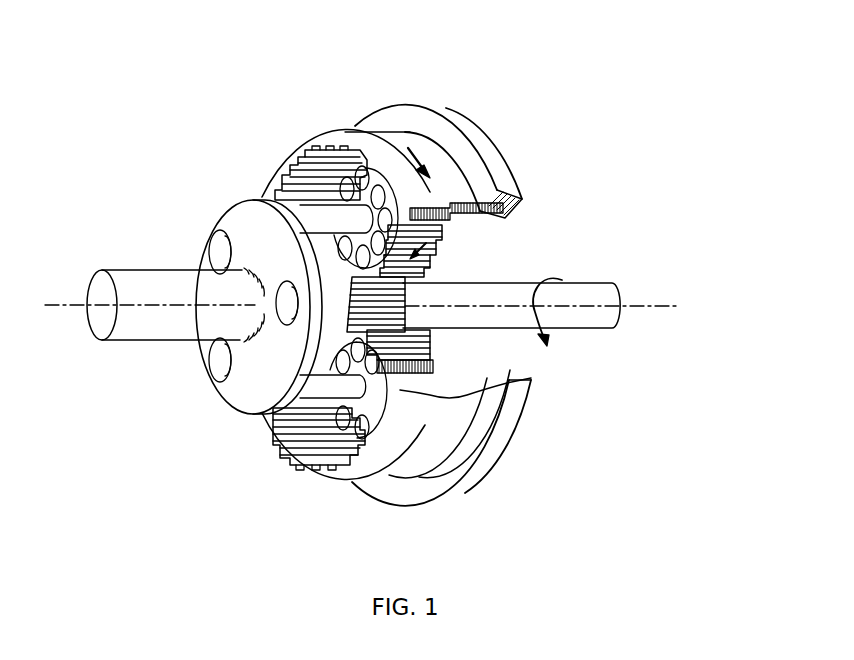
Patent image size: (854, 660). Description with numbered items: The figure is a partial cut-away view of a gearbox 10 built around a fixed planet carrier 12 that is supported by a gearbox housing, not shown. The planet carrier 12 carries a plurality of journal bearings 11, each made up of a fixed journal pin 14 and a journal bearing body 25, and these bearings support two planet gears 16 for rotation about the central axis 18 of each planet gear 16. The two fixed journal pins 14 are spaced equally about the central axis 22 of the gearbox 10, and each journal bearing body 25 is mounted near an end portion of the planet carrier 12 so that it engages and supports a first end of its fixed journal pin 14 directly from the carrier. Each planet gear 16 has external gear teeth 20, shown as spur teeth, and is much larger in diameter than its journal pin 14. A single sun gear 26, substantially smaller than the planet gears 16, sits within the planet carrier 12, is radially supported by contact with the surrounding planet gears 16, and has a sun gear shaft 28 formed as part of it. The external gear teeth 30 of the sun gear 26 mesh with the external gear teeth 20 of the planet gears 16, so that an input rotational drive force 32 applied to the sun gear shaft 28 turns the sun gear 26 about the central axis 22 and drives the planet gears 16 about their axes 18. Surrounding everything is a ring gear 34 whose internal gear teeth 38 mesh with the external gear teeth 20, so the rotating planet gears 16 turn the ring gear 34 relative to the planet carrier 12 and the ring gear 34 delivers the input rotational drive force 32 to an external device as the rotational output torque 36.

The gearbox 10 is at (537, 64).
The journal bearings 11 is at (397, 213).
The planet carrier 12 is at (139, 319).
The fixed journal pin 14 is at (283, 217).
The planet gears 16 is at (360, 150).
The central axis of planet gear 18 is at (430, 392).
The external gear teeth 20 is at (420, 235).
The central axis of the gearbox 22 is at (655, 303).
The journal bearing body 25 is at (388, 397).
The sun gear 26 is at (407, 297).
The sun gear shaft 28 is at (582, 290).
The external gear teeth of the sun gear 30 is at (363, 302).
The input rotational drive force 32 is at (547, 268).
The ring gear 34 is at (443, 175).
The rotational output torque 36 is at (408, 148).
The internal gear teeth 38 is at (300, 168).